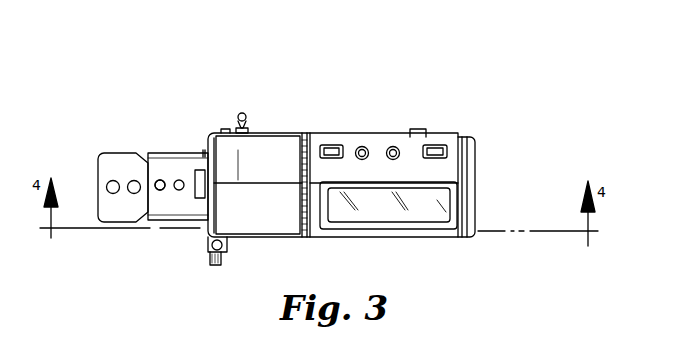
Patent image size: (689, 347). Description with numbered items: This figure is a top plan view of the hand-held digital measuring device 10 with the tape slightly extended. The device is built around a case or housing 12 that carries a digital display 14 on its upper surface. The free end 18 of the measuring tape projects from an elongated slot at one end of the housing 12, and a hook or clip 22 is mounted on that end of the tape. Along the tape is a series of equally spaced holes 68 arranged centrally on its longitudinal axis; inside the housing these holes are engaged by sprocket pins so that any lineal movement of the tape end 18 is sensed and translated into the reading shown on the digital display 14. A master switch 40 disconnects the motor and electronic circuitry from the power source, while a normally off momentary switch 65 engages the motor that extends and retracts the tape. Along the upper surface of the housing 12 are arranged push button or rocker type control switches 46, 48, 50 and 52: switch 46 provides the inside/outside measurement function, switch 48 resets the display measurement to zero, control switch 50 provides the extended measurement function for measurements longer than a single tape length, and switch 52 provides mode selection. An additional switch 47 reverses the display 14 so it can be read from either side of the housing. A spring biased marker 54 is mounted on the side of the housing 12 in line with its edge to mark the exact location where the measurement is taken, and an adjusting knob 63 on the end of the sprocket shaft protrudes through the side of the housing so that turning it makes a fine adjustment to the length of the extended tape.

The hand-held digital measuring device 10 is at (480, 160).
The housing 12 is at (260, 147).
The digital display 14 is at (438, 215).
The free end of the measuring tape 18 is at (178, 162).
The hook 22 is at (124, 160).
The master switch 40 is at (202, 150).
The control switch 46 is at (328, 146).
The additional switch 47 is at (420, 128).
The control switch 48 is at (365, 147).
The control switch 50 is at (395, 147).
The control switch 52 is at (432, 145).
The spring biased marker 54 is at (222, 245).
The adjusting knob 63 is at (242, 112).
The momentary switch 65 is at (226, 128).
The holes 68 is at (160, 190).